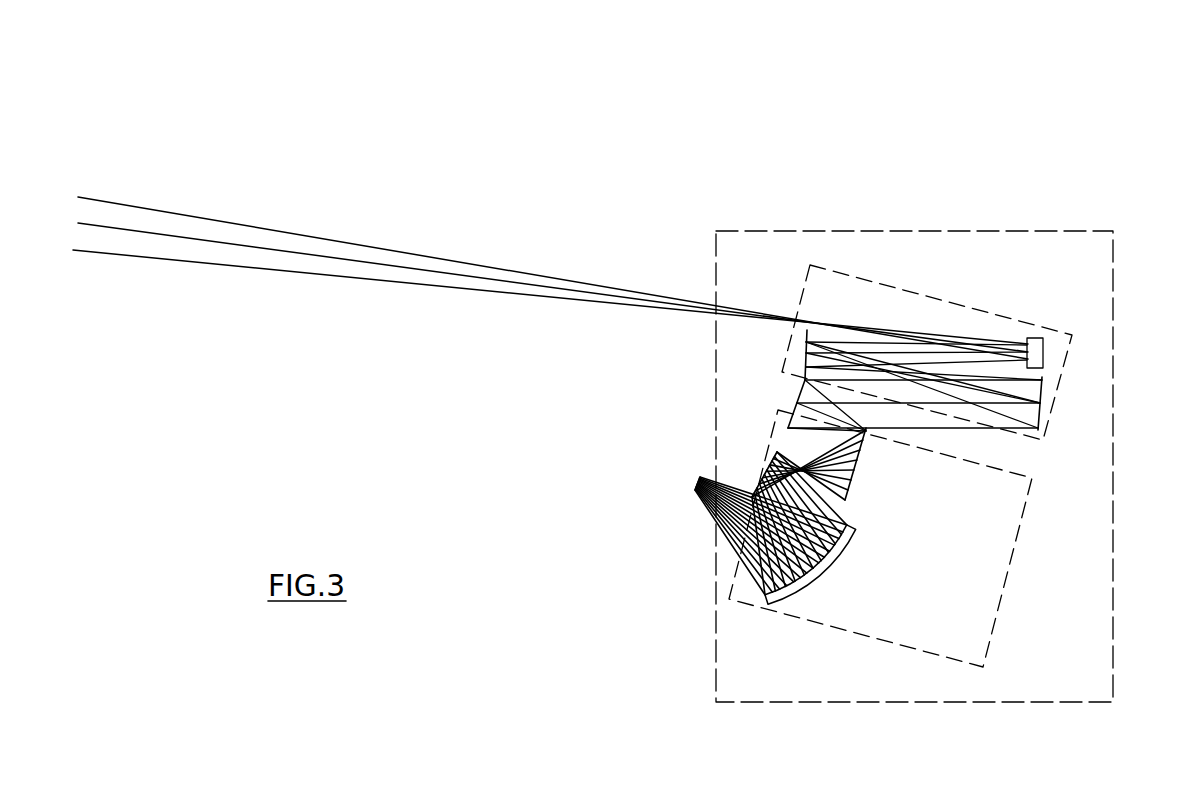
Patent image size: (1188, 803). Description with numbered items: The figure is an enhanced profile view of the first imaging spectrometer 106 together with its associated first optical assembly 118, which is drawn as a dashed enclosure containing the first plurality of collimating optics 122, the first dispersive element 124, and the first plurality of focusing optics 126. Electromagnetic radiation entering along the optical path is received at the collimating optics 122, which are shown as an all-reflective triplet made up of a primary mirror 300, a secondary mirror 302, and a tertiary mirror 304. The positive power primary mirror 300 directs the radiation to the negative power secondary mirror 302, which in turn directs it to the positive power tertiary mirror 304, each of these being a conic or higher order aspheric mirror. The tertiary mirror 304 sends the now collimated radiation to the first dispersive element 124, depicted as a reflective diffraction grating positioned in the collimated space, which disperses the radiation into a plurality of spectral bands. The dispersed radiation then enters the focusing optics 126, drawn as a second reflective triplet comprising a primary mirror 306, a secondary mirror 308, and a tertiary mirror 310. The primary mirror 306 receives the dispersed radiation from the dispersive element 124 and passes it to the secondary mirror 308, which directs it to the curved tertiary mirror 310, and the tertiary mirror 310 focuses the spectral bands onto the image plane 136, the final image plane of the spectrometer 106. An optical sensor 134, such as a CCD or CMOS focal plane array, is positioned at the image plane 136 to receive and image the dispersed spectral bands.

The first imaging spectrometer 106 is at (969, 73).
The first optical assembly 118 is at (915, 231).
The first plurality of collimating optics 122 is at (970, 306).
The first dispersive element 124 is at (778, 411).
The first plurality of focusing optics 126 is at (1008, 546).
The first optical sensor 134 is at (700, 479).
The image plane 136 is at (686, 496).
The primary mirror 300 is at (1036, 337).
The secondary mirror 302 is at (806, 346).
The tertiary mirror 304 is at (1043, 395).
The primary mirror 306 is at (853, 474).
The secondary mirror 308 is at (768, 466).
The tertiary mirror 310 is at (856, 540).